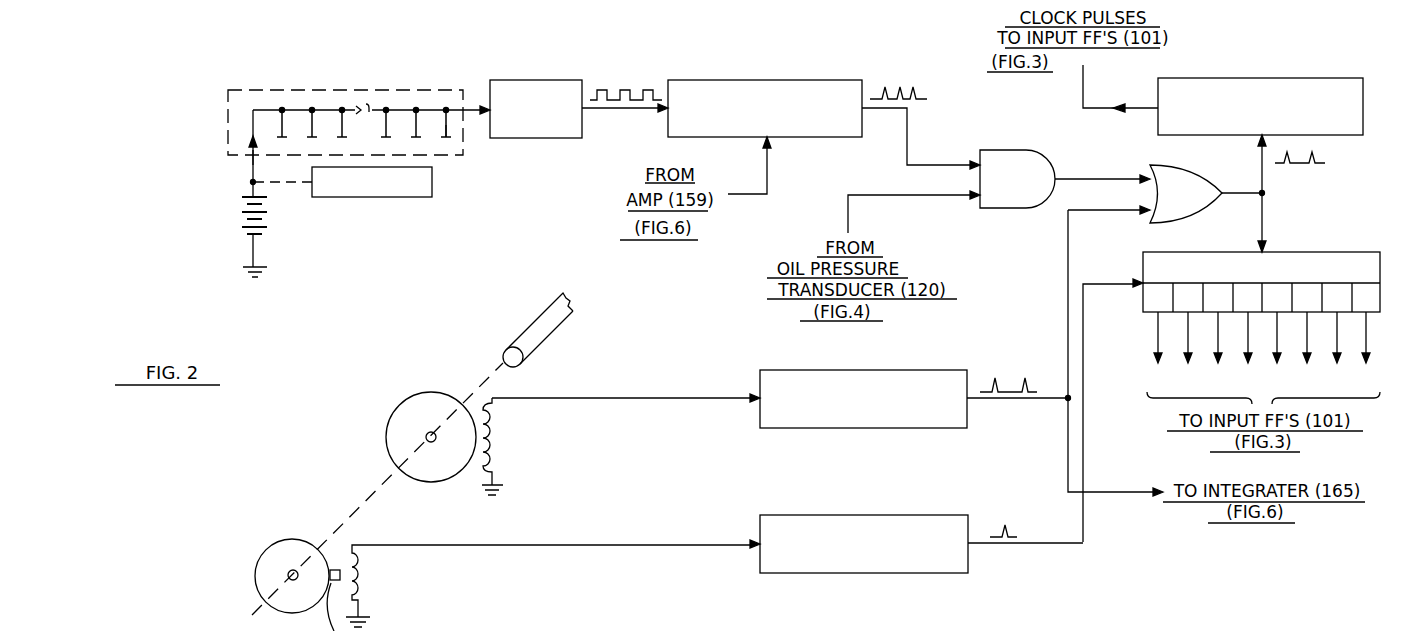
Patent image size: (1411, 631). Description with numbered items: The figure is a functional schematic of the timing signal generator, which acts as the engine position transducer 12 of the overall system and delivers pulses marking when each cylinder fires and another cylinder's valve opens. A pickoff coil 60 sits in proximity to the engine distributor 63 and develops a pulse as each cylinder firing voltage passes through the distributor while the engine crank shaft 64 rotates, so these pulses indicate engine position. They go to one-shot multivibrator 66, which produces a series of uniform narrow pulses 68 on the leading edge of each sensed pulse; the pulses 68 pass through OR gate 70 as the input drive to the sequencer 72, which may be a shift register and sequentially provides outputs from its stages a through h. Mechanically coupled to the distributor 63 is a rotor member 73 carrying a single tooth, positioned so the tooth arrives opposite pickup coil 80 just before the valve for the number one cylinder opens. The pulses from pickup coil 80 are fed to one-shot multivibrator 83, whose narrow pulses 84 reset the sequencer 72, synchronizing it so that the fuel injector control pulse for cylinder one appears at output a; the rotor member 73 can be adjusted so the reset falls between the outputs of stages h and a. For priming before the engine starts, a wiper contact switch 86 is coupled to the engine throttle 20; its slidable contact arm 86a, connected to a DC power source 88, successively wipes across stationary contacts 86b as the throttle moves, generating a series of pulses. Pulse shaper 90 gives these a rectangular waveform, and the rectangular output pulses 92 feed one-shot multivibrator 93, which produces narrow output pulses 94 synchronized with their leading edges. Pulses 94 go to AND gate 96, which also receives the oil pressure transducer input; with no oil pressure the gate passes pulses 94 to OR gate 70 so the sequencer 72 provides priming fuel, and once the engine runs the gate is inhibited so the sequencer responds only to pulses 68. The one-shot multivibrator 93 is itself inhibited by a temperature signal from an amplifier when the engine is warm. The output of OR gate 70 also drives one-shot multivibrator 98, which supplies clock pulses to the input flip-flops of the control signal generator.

The wiper contact switch 86 is at (251, 80).
The slidable contact arm 86a is at (250, 163).
The stationary contacts 86b is at (418, 132).
The DC power source 88 is at (267, 213).
The engine throttle 20 is at (360, 194).
The pulse shaper 90 is at (568, 88).
The rectangular output pulses 92 is at (623, 90).
The one-shot multivibrator 93 is at (820, 90).
The narrow output pulses 94 is at (900, 90).
The AND gate 96 is at (1030, 200).
The OR gate 70 is at (1175, 178).
The one-shot multivibrator 98 is at (1342, 95).
The sequencer 72 is at (1353, 252).
The one-shot multivibrator 66 is at (948, 390).
The uniform narrow pulses 68 is at (995, 382).
The one-shot multivibrator 83 is at (948, 533).
The narrow pulses 84 is at (1005, 530).
The engine position transducer 12 is at (377, 489).
The engine distributor 63 is at (412, 417).
The engine crank shaft 64 is at (537, 334).
The pickoff coil 60 is at (497, 447).
The rotor member 73 is at (283, 557).
The pickup coil 80 is at (364, 570).